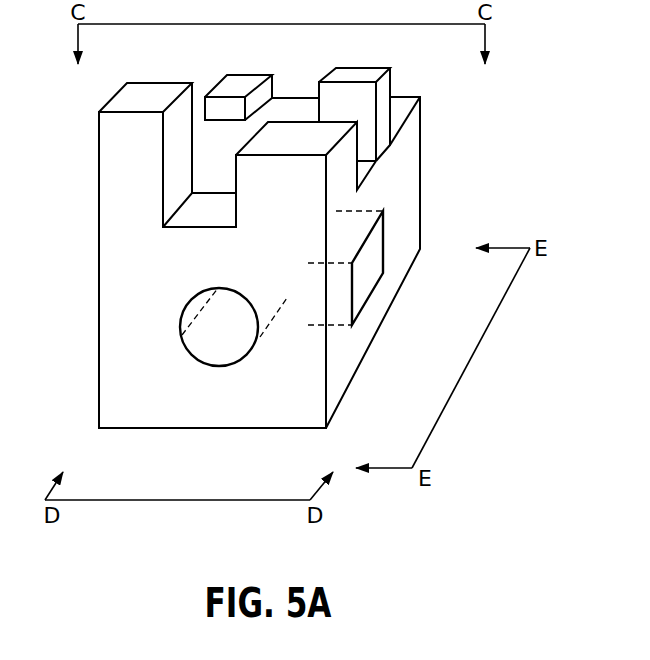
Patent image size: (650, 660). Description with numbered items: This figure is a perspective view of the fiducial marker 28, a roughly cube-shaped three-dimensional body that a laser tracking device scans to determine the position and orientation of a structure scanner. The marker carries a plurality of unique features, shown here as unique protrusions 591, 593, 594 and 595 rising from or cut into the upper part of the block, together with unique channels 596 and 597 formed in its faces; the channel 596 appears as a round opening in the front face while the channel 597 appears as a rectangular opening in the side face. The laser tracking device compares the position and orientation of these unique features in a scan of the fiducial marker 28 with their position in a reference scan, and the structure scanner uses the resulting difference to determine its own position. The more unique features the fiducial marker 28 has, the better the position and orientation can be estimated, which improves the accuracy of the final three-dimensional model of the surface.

The fiducial marker 28 is at (65, 317).
The unique protrusion 591 is at (93, 182).
The unique protrusion 593 is at (277, 76).
The unique protrusion 594 is at (395, 88).
The unique protrusion 595 is at (232, 177).
The unique channel 596 is at (212, 355).
The unique channel 597 is at (365, 290).